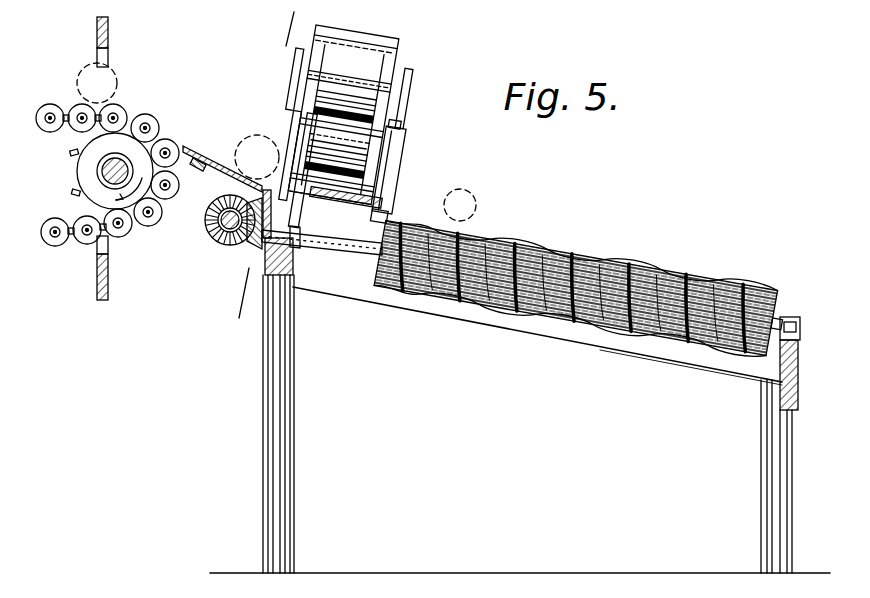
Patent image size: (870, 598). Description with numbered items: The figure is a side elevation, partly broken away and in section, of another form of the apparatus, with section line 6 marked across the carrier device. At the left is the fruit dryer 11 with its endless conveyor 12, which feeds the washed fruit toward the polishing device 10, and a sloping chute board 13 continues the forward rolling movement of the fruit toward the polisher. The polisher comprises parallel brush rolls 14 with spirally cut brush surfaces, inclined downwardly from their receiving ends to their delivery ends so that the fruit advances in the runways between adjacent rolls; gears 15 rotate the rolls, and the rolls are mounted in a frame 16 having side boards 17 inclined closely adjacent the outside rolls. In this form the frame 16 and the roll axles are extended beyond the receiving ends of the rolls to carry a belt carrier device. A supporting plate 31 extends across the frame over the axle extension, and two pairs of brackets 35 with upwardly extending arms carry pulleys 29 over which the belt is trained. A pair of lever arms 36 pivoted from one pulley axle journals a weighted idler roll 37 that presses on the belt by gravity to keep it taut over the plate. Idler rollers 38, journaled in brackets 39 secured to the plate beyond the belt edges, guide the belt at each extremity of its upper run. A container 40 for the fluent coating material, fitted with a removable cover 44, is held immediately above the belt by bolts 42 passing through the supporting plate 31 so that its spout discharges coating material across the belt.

The section line 6- 6 is at (262, 28).
The fruit brushing or polishing device 10 is at (592, 249).
The fruit dryer 11 is at (110, 90).
The endless conveyor 12 is at (150, 118).
The sloping chute board 13 is at (222, 167).
The brush rolls 14 is at (573, 333).
The gears 15 is at (250, 242).
The frame 16 is at (297, 481).
The side boards 17 is at (672, 364).
The pulleys 29 is at (306, 118).
The supporting plate 31 is at (328, 248).
The brackets 35 is at (401, 163).
The lever arms 36 is at (299, 64).
The idler roll 37 is at (382, 76).
The idler rollers 38 is at (300, 180).
The brackets 39 is at (382, 197).
The container 40 is at (354, 147).
The bolts 42 is at (363, 248).
The removable cover 44 is at (369, 128).